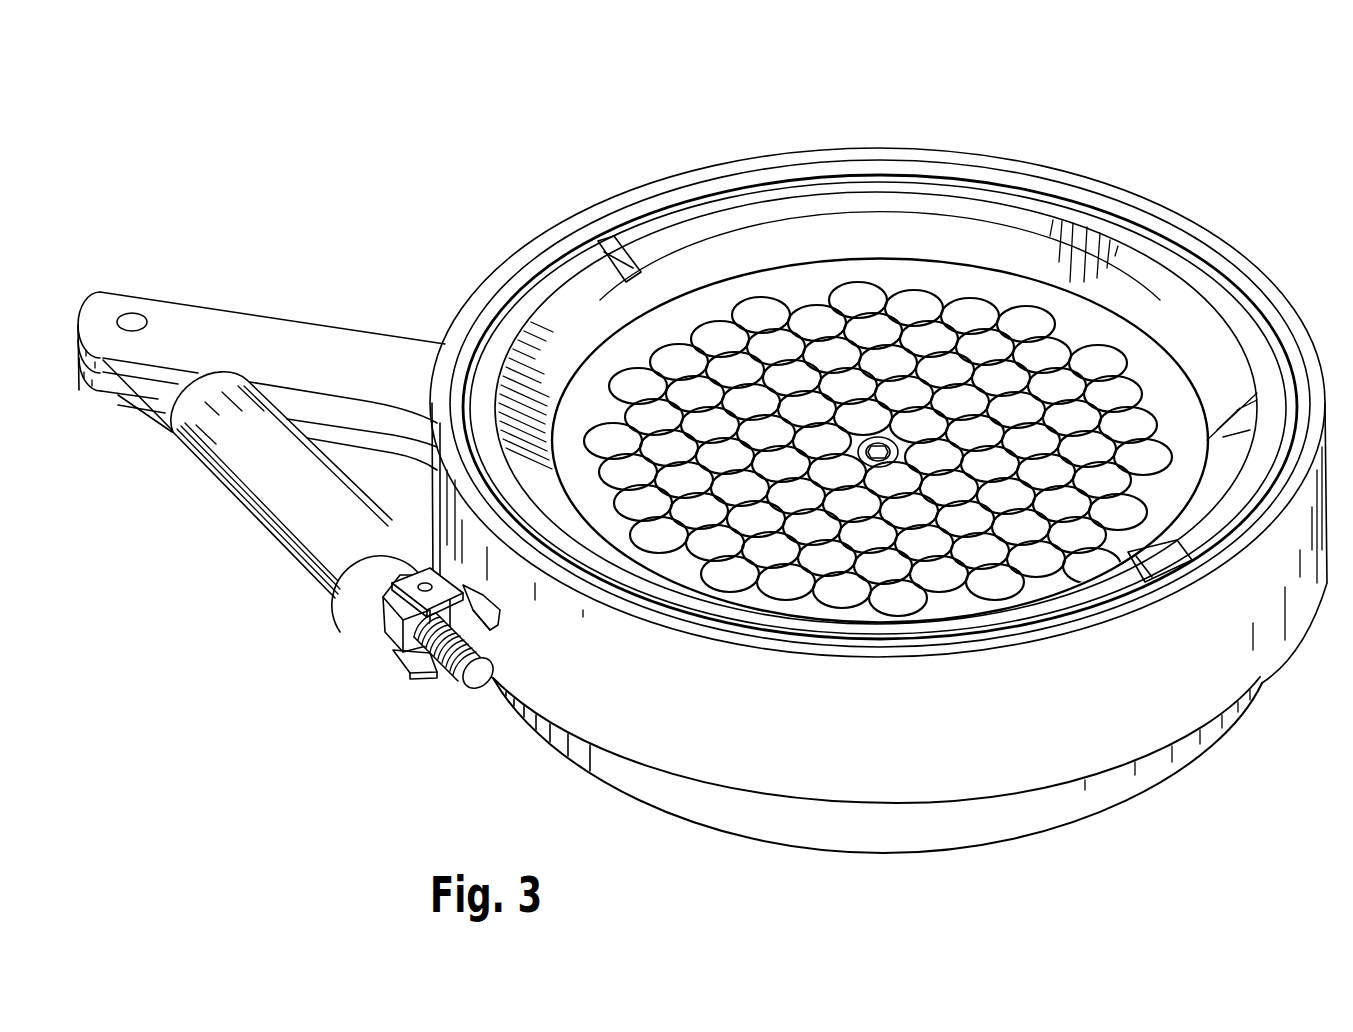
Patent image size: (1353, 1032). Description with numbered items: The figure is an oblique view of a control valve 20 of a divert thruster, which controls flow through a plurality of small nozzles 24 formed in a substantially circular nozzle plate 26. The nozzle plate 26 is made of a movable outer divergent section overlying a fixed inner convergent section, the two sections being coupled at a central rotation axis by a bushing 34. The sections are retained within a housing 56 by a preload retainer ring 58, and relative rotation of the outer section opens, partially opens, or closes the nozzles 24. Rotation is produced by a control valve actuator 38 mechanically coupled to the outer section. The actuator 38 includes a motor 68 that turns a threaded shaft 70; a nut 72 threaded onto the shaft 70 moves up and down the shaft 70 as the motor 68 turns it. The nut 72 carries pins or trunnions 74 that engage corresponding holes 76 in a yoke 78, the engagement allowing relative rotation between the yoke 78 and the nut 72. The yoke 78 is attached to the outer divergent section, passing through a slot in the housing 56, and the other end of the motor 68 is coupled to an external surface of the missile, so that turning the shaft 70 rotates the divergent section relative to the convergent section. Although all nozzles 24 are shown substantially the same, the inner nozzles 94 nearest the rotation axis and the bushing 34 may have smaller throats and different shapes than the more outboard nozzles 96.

The control valve 20 is at (426, 136).
The nozzles 24 is at (995, 587).
The nozzle plate 26 is at (1077, 317).
The bushing 34 is at (887, 453).
The control valve actuator 38 is at (198, 601).
The housing 56 is at (590, 712).
The preload retainer ring 58 is at (763, 243).
The motor 68 is at (187, 453).
The threaded shaft 70 is at (468, 690).
The nut 72 is at (383, 655).
The trunnions 74 is at (378, 634).
The holes 76 is at (413, 680).
The yoke 78 is at (329, 603).
The inner nozzles 94 is at (947, 453).
The outboard nozzles 96 is at (937, 573).